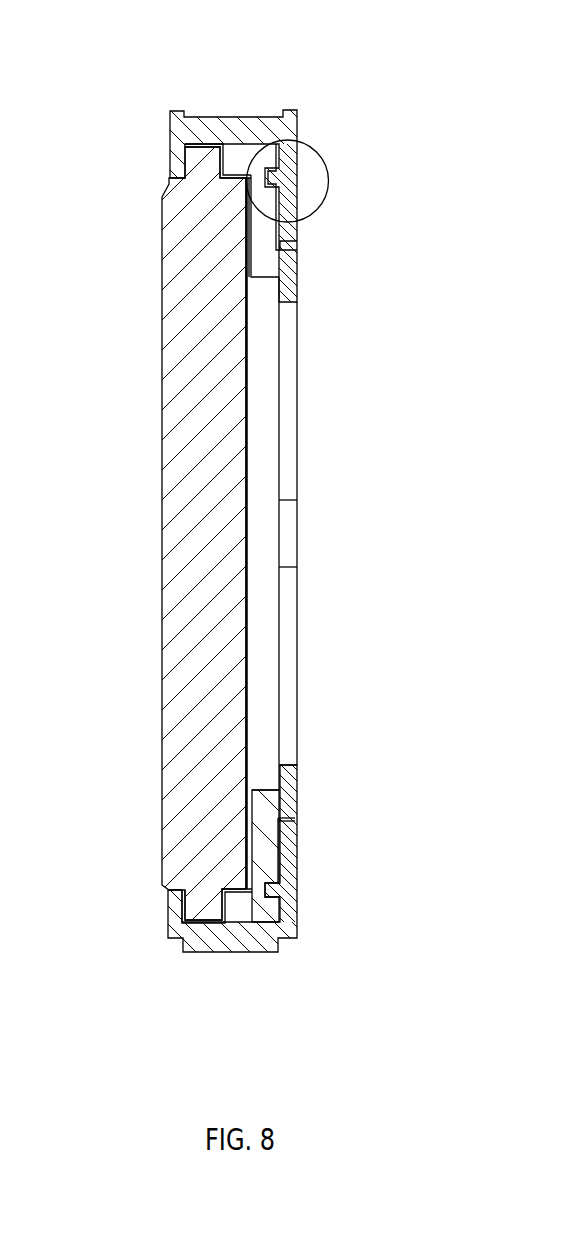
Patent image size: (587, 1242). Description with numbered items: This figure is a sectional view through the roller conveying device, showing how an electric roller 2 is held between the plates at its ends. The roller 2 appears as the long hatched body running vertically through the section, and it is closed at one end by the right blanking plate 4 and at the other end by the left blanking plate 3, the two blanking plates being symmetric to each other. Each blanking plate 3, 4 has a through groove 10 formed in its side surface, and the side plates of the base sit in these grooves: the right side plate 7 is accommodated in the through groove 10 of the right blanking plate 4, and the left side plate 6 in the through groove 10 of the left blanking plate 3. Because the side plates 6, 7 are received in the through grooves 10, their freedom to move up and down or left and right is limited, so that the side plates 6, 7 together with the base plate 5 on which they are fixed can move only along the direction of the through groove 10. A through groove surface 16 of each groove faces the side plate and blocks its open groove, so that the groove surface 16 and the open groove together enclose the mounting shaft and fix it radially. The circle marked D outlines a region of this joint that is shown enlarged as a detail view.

The electric roller 2 is at (177, 378).
The left blanking plate 3 is at (203, 938).
The right blanking plate 4 is at (210, 128).
The base plate 5 is at (273, 262).
The left side plate 6 is at (257, 907).
The right side plate 7 is at (244, 157).
The through groove 10 is at (256, 140).
The through groove surface 16 is at (188, 143).
The detail region D is at (325, 200).